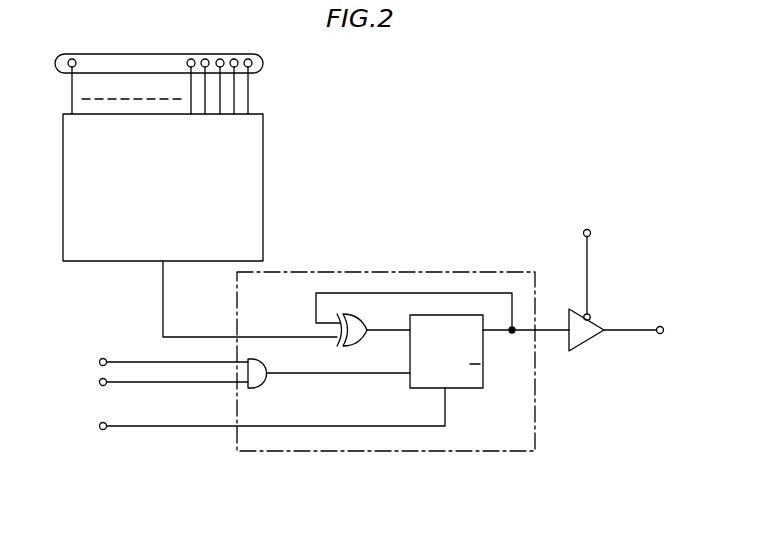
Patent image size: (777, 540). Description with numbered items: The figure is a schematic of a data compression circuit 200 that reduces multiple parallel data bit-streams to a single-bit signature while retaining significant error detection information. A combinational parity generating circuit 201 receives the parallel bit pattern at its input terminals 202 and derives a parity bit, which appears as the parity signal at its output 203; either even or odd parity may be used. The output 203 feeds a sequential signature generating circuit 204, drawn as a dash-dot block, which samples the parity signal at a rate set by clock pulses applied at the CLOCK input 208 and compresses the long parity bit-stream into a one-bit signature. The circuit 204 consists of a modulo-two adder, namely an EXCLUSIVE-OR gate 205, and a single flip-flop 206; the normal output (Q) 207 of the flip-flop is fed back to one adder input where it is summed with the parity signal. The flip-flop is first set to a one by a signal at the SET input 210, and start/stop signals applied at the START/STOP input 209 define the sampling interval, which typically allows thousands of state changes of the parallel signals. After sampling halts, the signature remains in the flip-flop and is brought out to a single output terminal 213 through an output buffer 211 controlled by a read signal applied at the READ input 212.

The data compression circuit 200 is at (477, 132).
The combinational parity generating circuit 201 is at (263, 197).
The input terminals 202 is at (263, 62).
The output 203 is at (163, 310).
The sequential signature generating circuit 204 is at (400, 271).
The modulo-2 adder (EXCLUSIVE-OR gate) 205 is at (353, 341).
The flip-flop 206 is at (467, 387).
The normal output (Q) 207 is at (497, 334).
The clock input terminal 208 is at (115, 361).
The start/stop input 209 is at (115, 381).
The SET input 210 is at (115, 425).
The output buffer 211 is at (578, 348).
The READ input 212 is at (587, 265).
The output terminal 213 is at (632, 329).